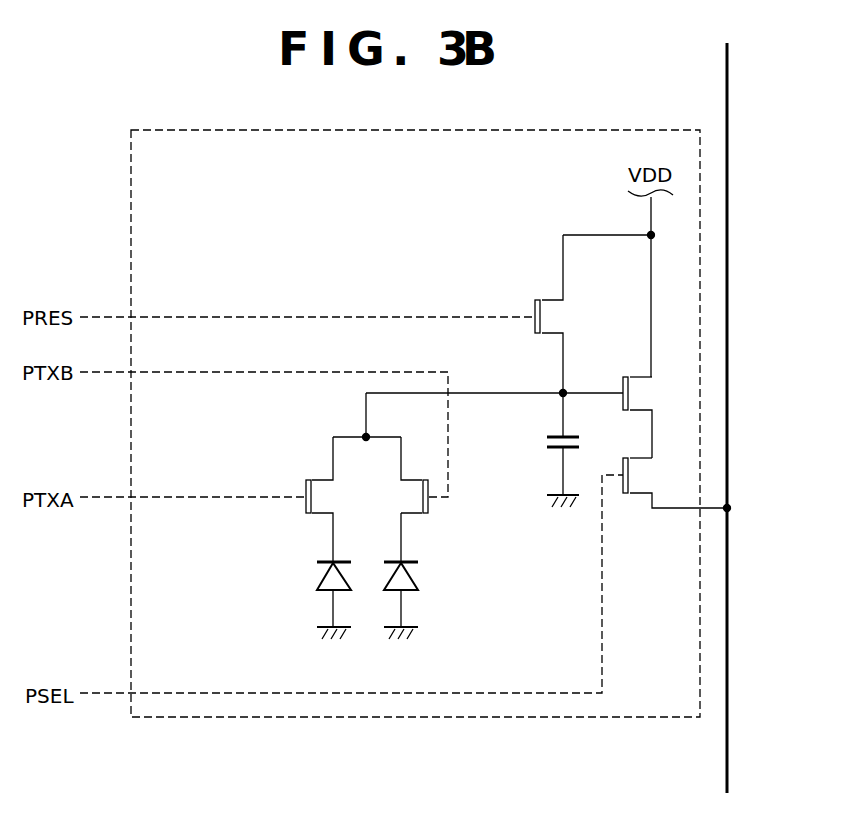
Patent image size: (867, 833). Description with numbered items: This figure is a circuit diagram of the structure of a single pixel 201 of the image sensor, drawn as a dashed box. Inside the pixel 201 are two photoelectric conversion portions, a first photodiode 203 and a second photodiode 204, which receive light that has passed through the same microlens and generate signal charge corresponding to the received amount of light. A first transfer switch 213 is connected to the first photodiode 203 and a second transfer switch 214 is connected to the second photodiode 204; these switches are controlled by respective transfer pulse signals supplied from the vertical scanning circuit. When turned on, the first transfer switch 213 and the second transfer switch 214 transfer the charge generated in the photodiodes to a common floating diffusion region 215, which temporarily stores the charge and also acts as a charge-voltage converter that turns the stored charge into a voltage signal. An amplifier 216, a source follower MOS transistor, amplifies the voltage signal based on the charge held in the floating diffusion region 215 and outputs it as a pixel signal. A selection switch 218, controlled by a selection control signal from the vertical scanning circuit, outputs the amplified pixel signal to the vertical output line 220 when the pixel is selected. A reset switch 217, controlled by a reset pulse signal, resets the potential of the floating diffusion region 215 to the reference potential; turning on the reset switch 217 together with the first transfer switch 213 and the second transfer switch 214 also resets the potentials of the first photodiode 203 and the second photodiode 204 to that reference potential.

The pixel 201 is at (183, 128).
The first photodiode 203 is at (315, 576).
The second photodiode 204 is at (418, 576).
The first transfer switch 213 is at (303, 505).
The second transfer switch 214 is at (435, 505).
The floating diffusion region 215 is at (545, 443).
The amplifier 216 is at (632, 375).
The reset switch 217 is at (540, 297).
The selection switch 218 is at (625, 500).
The vertical output line 220 is at (728, 573).